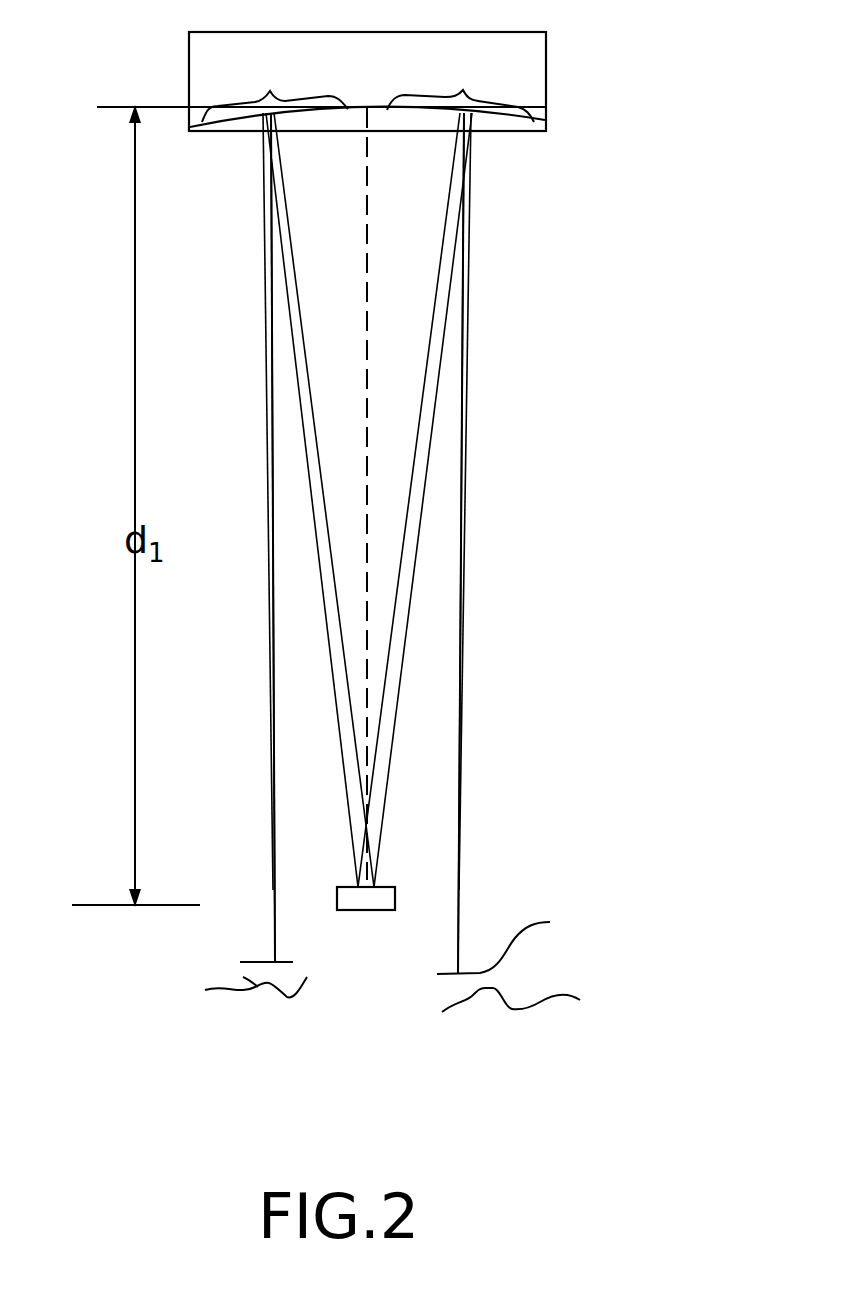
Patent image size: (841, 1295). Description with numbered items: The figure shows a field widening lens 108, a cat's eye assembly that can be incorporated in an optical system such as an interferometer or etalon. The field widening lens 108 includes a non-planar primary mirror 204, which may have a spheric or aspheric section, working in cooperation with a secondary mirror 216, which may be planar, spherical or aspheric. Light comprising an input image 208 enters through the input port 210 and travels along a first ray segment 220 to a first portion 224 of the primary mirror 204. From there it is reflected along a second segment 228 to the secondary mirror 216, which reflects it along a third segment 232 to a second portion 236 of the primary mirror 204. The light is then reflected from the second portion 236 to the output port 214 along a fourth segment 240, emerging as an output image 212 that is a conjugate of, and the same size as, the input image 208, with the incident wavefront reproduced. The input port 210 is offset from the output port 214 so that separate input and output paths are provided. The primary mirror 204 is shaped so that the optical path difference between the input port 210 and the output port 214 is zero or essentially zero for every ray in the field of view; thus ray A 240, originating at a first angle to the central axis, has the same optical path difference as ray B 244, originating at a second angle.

The field widening lens 108 is at (590, 596).
The non-planar primary mirror 204 is at (547, 92).
The input image 208 is at (537, 1002).
The input port 210 is at (519, 938).
The output image 212 is at (228, 997).
The output port 214 is at (252, 962).
The secondary mirror 216 is at (396, 900).
The first ray segment 220 is at (460, 797).
The first portion of the primary mirror 224 is at (460, 86).
The second segment 228 is at (423, 490).
The third segment 232 is at (304, 426).
The second portion of the primary mirror 236 is at (275, 86).
The fourth segment (ray A) 240 is at (272, 253).
The ray B 244 is at (288, 335).